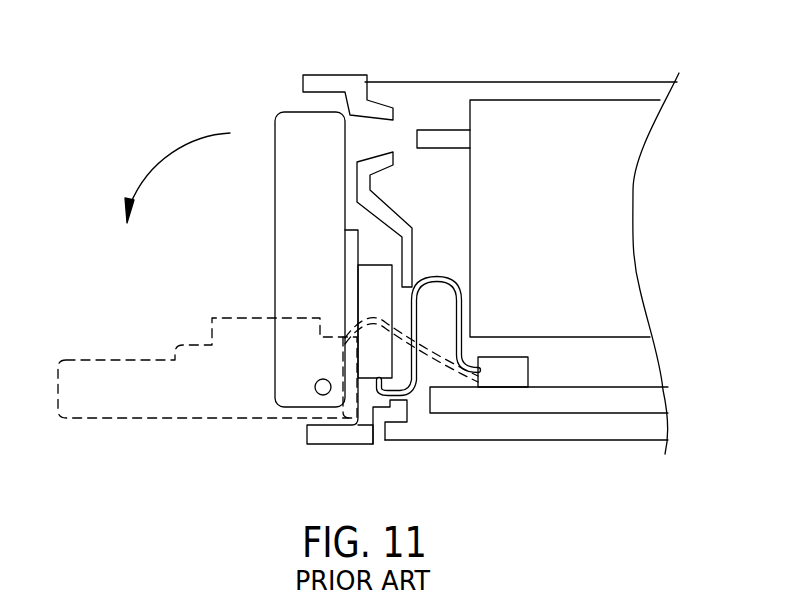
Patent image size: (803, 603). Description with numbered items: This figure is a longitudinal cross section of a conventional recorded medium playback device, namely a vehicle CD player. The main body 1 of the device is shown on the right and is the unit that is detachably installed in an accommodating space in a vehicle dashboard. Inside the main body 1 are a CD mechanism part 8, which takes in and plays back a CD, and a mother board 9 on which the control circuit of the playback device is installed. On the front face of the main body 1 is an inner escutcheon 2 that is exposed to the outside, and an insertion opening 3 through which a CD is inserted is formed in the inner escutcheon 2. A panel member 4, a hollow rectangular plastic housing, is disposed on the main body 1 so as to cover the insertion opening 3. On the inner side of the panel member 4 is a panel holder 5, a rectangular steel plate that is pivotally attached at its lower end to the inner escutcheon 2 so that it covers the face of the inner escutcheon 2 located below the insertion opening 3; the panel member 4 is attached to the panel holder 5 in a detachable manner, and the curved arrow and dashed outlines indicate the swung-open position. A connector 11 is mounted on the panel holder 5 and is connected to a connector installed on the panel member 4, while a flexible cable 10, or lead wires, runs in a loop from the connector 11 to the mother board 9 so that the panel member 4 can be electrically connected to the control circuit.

The main body 1 is at (573, 88).
The inner escutcheon 2 is at (347, 80).
The insertion opening 3 is at (383, 143).
The panel member 4 is at (290, 118).
The panel holder 5 is at (334, 409).
The CD mechanism part 8 is at (605, 122).
The mother board 9 is at (518, 402).
The flexible cable 10 is at (447, 378).
The connector 11 is at (368, 372).